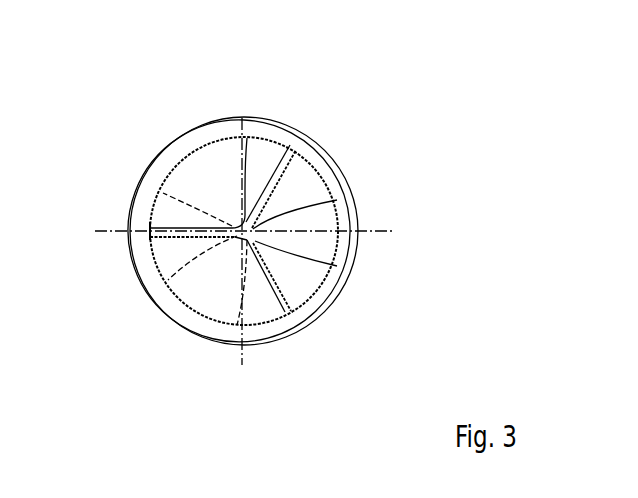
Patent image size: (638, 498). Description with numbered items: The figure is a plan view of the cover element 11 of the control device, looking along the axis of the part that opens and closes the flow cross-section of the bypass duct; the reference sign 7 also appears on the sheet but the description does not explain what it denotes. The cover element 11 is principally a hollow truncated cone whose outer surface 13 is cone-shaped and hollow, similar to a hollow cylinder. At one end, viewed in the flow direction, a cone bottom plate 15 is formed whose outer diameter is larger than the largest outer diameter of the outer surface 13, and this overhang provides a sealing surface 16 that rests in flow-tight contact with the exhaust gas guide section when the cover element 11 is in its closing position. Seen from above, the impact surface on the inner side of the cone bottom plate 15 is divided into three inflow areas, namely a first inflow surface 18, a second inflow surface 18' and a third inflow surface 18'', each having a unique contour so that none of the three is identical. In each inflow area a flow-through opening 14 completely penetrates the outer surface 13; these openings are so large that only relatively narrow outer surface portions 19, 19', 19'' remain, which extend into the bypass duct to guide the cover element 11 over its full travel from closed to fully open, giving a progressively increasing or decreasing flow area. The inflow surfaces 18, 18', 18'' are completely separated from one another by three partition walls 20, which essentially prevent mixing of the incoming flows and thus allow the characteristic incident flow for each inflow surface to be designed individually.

The pressure compensation element 7 is at (433, 144).
The cover element 11 is at (269, 112).
The outer surface 13 is at (288, 152).
The flow-through openings 14 is at (186, 168).
The cone bottom plate 15 is at (212, 130).
The sealing surface 16 is at (192, 322).
The first inflow surface 18 is at (322, 224).
The second inflow surface 18' is at (173, 179).
The third inflow surface 18'' is at (207, 311).
The outer surface portion 19 is at (299, 157).
The outer surface portion 19' is at (146, 247).
The outer surface portion 19'' is at (288, 313).
The partition walls 20 is at (280, 172).